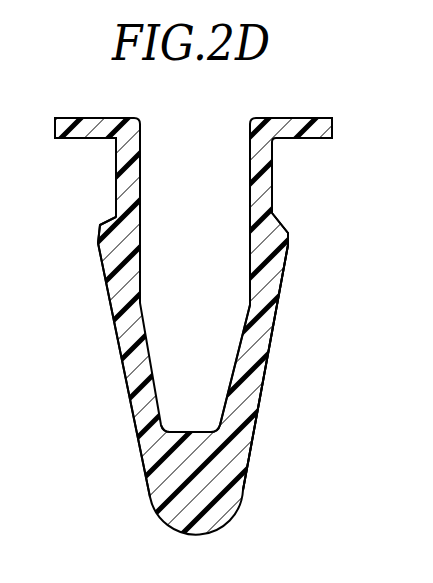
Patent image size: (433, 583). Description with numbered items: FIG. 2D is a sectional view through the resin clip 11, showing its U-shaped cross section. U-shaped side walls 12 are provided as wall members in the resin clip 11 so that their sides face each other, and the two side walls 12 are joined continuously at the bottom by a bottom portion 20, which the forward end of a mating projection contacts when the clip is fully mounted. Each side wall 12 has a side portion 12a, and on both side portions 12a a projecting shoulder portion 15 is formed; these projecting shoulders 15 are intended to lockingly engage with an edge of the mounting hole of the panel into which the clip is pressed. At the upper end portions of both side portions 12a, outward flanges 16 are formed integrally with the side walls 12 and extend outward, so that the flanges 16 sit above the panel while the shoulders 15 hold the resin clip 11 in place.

The resin clip 11 is at (269, 108).
The side wall 12 is at (287, 366).
The side portion 12a is at (120, 352).
The projecting shoulder portion 15 is at (108, 216).
The outward flange 16 is at (65, 116).
The bottom portion 20 is at (200, 432).